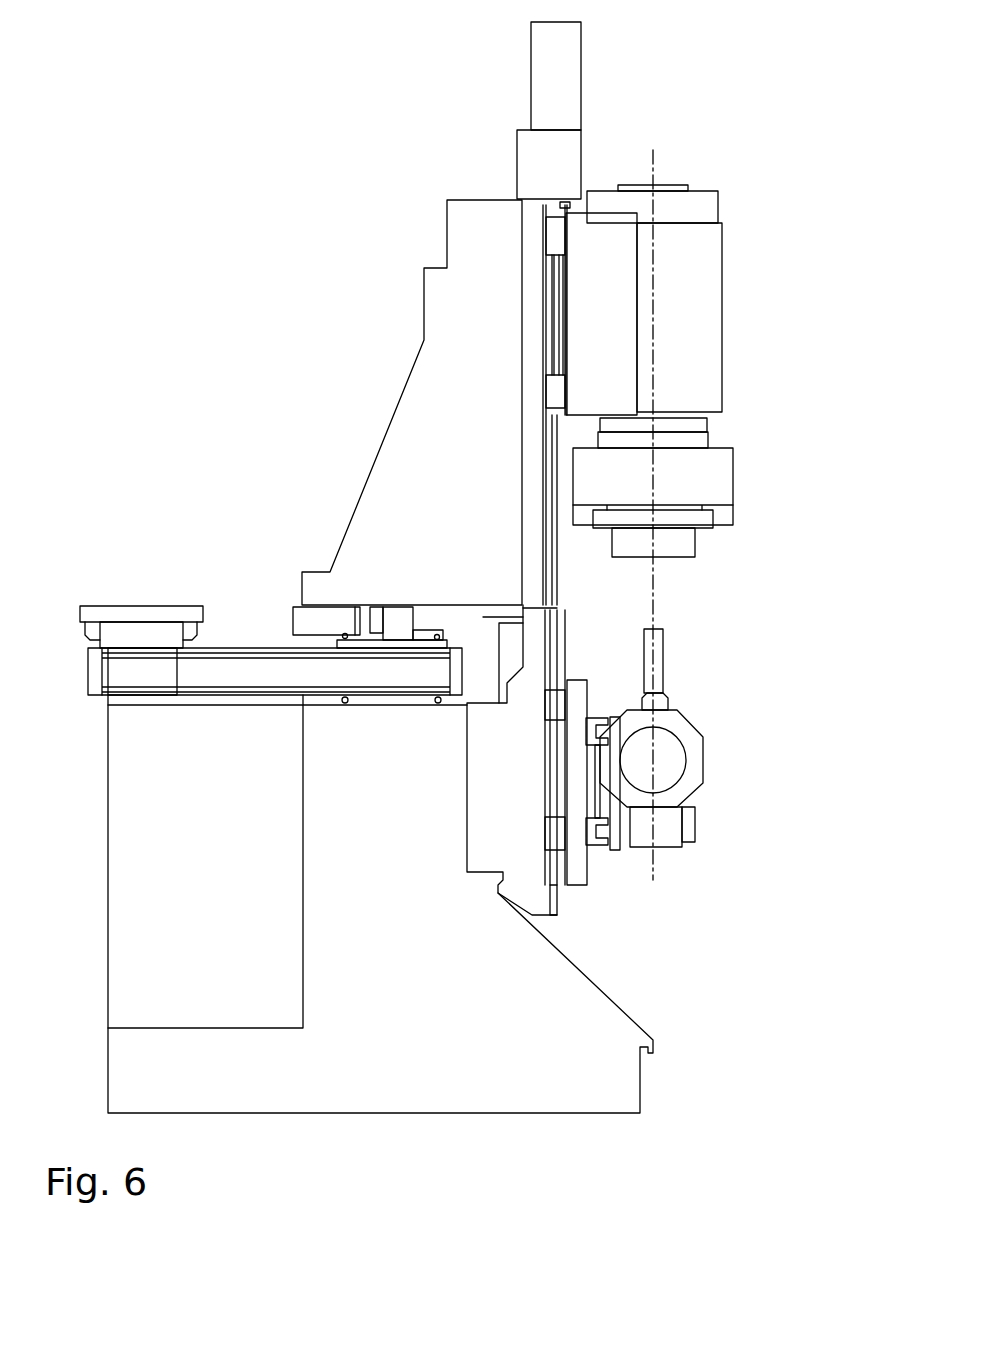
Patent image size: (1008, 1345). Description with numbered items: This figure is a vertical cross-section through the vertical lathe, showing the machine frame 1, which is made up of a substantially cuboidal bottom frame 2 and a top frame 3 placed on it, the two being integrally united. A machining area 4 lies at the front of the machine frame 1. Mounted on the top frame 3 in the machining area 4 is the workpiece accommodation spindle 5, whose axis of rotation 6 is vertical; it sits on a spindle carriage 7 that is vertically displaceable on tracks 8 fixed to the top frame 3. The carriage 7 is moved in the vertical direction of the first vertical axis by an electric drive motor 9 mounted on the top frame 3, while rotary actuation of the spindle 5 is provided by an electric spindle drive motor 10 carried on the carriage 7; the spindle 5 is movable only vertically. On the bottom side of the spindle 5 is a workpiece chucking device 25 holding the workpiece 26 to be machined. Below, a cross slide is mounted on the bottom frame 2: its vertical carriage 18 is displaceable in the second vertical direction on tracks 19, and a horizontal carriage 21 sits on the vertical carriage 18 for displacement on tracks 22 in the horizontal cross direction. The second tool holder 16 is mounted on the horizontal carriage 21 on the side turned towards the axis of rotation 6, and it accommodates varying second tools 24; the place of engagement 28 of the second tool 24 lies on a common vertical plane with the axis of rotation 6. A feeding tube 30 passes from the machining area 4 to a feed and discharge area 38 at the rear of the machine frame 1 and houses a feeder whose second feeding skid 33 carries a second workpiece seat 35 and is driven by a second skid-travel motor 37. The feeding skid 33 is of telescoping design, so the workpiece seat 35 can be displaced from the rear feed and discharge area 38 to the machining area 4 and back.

The machine frame 1 is at (156, 334).
The bottom frame 2 is at (600, 1027).
The top frame 3 is at (432, 350).
The machining area 4 is at (690, 572).
The workpiece accommodation spindle 5 is at (708, 417).
The axis of rotation 6 is at (660, 160).
The spindle carriage 7 is at (573, 243).
The tracks 8 is at (550, 288).
The Z1 drive motor 9 is at (538, 76).
The spindle drive motor 10 is at (708, 200).
The second tool holder 16 is at (700, 742).
The Z2 carriage 18 is at (578, 685).
The tracks 19 is at (557, 895).
The X2 carriage 21 is at (617, 850).
The tracks 22 is at (607, 730).
The second tool 24 is at (668, 673).
The workpiece chucking device 25 is at (715, 460).
The workpiece 26 is at (700, 533).
The place of engagement 28 is at (663, 627).
The feeding tube 30 is at (483, 617).
The second feeding skid 33 is at (249, 665).
The second workpiece seat 35 is at (208, 622).
The second skid-travel motor 37 is at (293, 600).
The feed and discharge area 38 is at (95, 592).